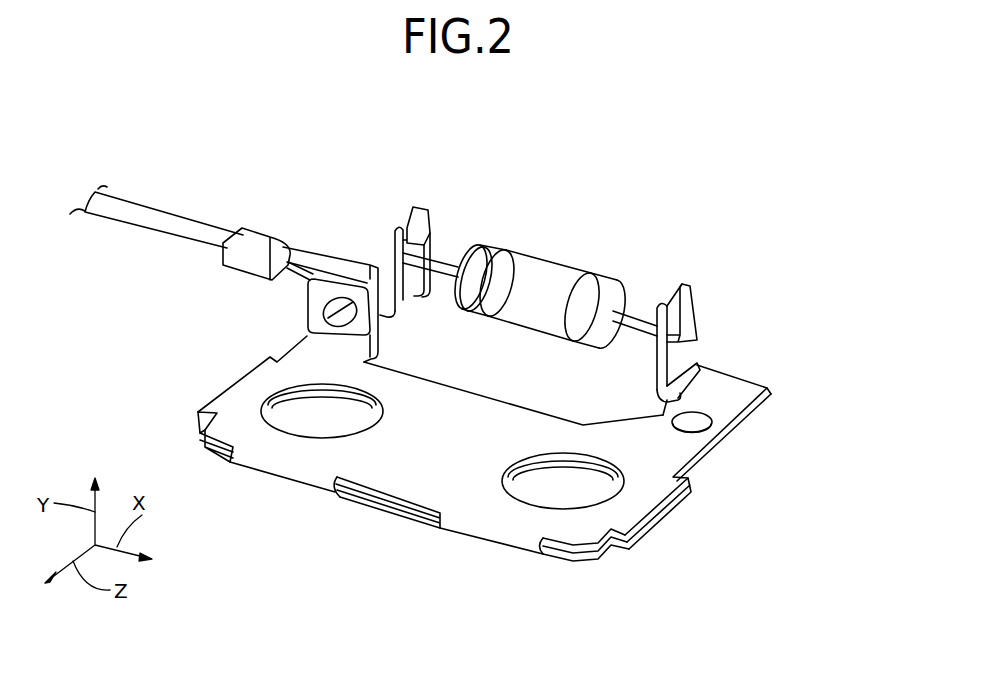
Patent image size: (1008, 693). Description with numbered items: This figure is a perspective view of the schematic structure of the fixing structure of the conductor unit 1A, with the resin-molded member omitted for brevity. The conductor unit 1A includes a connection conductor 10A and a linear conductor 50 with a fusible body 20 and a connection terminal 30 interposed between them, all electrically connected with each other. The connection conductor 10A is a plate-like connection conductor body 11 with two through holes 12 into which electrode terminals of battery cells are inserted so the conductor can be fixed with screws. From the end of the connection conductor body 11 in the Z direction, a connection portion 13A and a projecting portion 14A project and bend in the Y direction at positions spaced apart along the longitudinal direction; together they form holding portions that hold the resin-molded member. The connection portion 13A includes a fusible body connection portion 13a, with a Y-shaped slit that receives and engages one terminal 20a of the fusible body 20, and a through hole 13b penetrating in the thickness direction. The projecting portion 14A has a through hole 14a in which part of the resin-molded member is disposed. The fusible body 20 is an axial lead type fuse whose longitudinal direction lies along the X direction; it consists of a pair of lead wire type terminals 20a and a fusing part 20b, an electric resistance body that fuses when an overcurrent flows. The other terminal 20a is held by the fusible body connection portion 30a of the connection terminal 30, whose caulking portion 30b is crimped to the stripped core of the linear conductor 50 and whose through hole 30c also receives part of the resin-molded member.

The conductor unit 1A is at (633, 143).
The connection conductor 10A is at (649, 534).
The connection conductor body 11 is at (427, 462).
The through hole 12 is at (297, 432).
The connection portion 13A is at (774, 378).
The fusible body connection portion 13a is at (690, 313).
The through hole 13b is at (712, 424).
The projecting portion 14A is at (257, 313).
The through hole 14a is at (330, 320).
The fusible body 20 is at (546, 248).
The terminal 20a is at (690, 221).
The fusing part 20b is at (543, 283).
The connection terminal 30 is at (336, 233).
The fusible body connection portion 30a is at (428, 213).
The caulking portion 30b is at (265, 232).
The through hole 30c is at (392, 226).
The linear conductor 50 is at (168, 207).